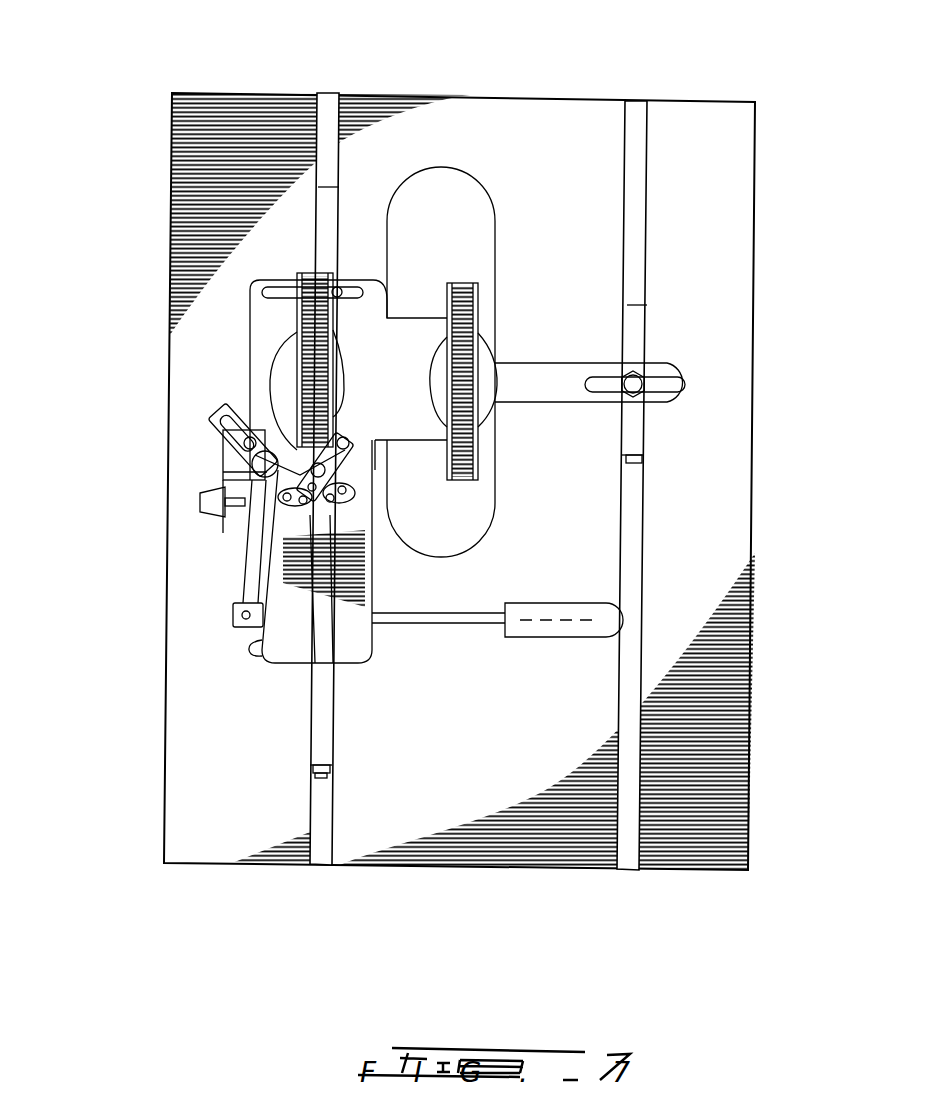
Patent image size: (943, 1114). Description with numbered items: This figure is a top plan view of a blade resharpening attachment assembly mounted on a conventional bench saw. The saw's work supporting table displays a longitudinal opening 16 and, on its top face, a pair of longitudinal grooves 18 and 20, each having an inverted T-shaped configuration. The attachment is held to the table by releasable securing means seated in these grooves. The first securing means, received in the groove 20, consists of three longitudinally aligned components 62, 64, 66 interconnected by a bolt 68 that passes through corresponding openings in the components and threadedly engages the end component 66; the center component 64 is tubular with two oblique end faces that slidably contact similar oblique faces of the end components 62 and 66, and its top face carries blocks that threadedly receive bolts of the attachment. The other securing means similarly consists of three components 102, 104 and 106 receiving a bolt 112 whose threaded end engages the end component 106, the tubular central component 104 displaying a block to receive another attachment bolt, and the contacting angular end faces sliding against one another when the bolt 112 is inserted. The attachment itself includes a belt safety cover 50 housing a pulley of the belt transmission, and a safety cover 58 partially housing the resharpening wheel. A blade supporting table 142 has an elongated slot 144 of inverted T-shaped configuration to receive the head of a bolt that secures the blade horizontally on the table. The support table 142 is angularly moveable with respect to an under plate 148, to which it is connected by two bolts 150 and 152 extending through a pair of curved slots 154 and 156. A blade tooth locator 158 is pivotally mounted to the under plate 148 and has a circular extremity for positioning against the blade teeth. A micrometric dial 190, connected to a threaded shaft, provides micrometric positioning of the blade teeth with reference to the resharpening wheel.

The longitudinal opening 16 is at (440, 187).
The longitudinal groove 18 is at (638, 115).
The longitudinal groove 20 is at (325, 113).
The belt safety cover 50 is at (463, 300).
The safety cover 58 is at (250, 318).
The end component 62 is at (327, 748).
The center component 64 is at (317, 688).
The end component 66 is at (330, 200).
The bolt 68 is at (317, 775).
The end component 102 is at (640, 440).
The central component 104 is at (648, 345).
The end component 106 is at (640, 318).
The bolt 112 is at (640, 470).
The blade supporting table 142 is at (270, 617).
The elongated slot 144 is at (293, 598).
The under plate 148 is at (240, 622).
The bolt 150 is at (335, 505).
The bolt 152 is at (222, 456).
The curved slot 154 is at (347, 493).
The curved slot 156 is at (280, 518).
The blade tooth locator 158 is at (258, 415).
The micrometric dial 190 is at (200, 500).